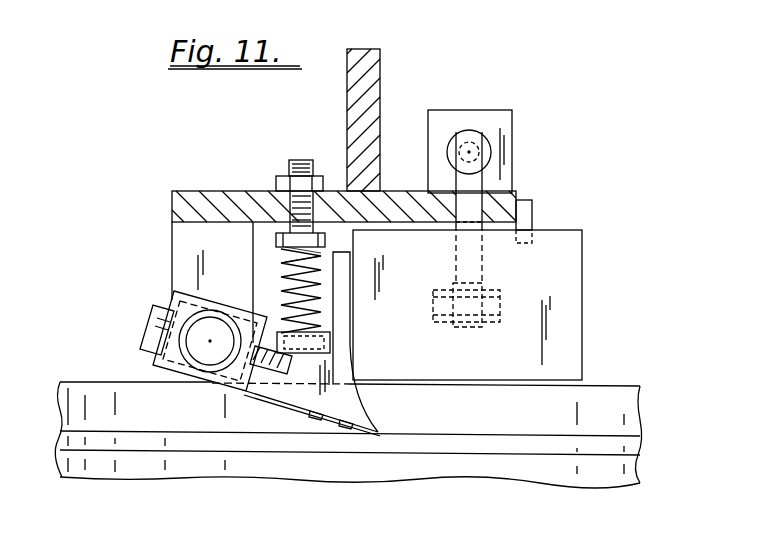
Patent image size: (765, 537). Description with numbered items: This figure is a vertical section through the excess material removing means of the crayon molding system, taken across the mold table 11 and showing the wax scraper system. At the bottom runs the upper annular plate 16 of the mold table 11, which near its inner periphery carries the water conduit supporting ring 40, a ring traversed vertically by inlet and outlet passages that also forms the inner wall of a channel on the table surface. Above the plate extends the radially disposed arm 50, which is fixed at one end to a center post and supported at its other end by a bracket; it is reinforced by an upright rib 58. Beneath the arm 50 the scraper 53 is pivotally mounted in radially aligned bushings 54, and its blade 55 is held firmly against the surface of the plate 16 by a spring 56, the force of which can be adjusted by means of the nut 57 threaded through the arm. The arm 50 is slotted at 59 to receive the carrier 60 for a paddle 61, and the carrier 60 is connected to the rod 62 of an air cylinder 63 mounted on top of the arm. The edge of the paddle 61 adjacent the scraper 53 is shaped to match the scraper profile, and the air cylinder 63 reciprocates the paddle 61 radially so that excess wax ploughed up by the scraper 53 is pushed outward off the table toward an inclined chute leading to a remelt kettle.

The mold table 11 is at (50, 441).
The upper annular plate 16 is at (507, 446).
The water conduit supporting ring 40 is at (608, 402).
The arm 50 is at (190, 206).
The scraper 53 is at (340, 367).
The bushings 54 is at (213, 368).
The blade 55 is at (378, 431).
The spring 56 is at (281, 276).
The nut 57 is at (276, 241).
The rib 58 is at (353, 107).
The slot 59 is at (514, 209).
The carrier 60 is at (462, 181).
The paddle 61 is at (572, 283).
The rod 62 is at (470, 150).
The air cylinder 63 is at (512, 151).